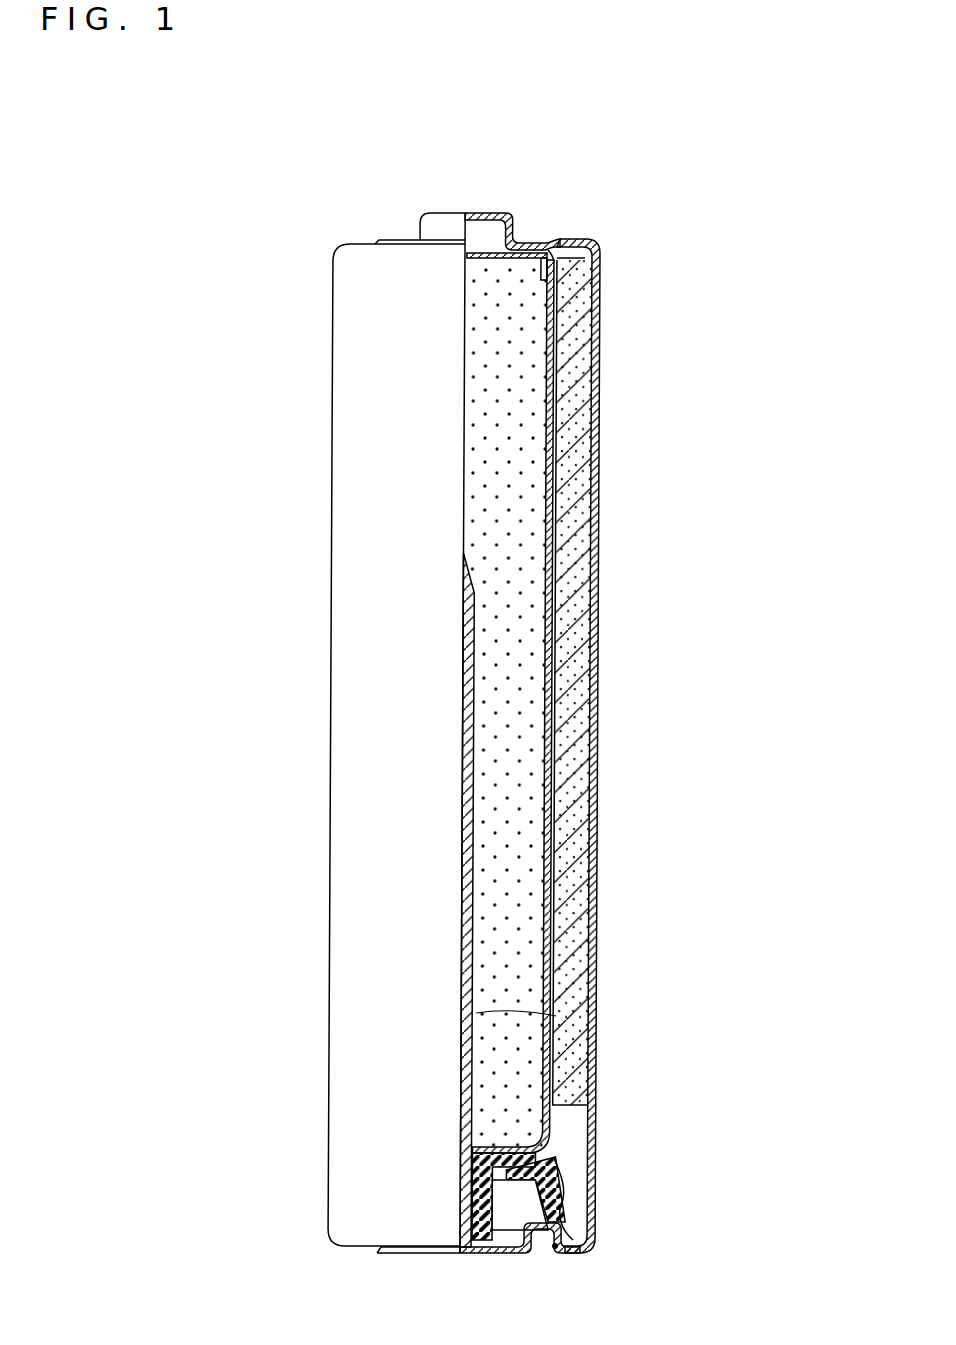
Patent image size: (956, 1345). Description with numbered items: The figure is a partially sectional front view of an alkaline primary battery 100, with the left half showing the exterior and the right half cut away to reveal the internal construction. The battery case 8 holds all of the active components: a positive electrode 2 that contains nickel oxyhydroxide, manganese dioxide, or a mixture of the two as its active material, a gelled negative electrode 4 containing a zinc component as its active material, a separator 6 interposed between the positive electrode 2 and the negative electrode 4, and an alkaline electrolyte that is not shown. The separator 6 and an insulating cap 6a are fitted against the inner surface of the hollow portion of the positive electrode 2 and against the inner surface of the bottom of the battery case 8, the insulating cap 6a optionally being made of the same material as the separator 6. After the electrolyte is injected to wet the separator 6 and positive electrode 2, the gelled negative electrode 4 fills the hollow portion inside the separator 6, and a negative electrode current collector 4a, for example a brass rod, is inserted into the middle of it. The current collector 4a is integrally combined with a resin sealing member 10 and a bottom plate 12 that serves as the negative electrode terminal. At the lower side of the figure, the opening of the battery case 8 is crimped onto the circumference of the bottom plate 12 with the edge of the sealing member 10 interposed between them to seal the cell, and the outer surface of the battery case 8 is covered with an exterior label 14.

The alkaline primary battery 100 is at (602, 157).
The positive electrode 2 is at (597, 423).
The gelled negative electrode 4 is at (530, 835).
The negative electrode current collector 4a is at (477, 1013).
The separator 6 is at (550, 622).
The insulating cap 6a is at (530, 257).
The battery case 8 is at (572, 722).
The resin sealing member 10 is at (520, 1137).
The bottom plate 12 is at (472, 1255).
The exterior label 14 is at (596, 1193).